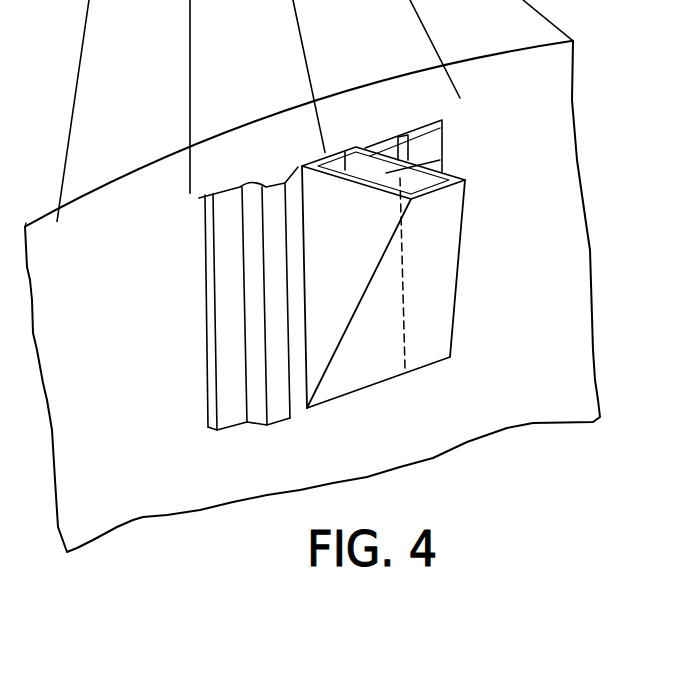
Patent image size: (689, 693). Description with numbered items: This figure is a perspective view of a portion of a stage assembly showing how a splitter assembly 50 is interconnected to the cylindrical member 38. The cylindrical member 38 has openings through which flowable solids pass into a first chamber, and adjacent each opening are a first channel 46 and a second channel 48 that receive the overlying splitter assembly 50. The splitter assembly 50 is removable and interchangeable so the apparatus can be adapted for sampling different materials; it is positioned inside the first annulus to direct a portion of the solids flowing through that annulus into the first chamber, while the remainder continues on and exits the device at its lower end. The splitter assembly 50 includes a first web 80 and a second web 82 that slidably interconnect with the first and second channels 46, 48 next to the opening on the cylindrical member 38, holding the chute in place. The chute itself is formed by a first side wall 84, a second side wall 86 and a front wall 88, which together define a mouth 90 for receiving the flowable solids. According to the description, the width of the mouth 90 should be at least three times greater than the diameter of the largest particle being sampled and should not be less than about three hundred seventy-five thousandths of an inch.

The cylindrical member 38 is at (546, 325).
The first channel 46 is at (250, 180).
The second channel 48 is at (397, 138).
The splitter assembly 50 is at (466, 213).
The first web 80 is at (298, 165).
The second web 82 is at (392, 137).
The first side wall 84 is at (350, 241).
The second side wall 86 is at (386, 173).
The front wall 88 is at (384, 356).
The mouth 90 is at (355, 168).